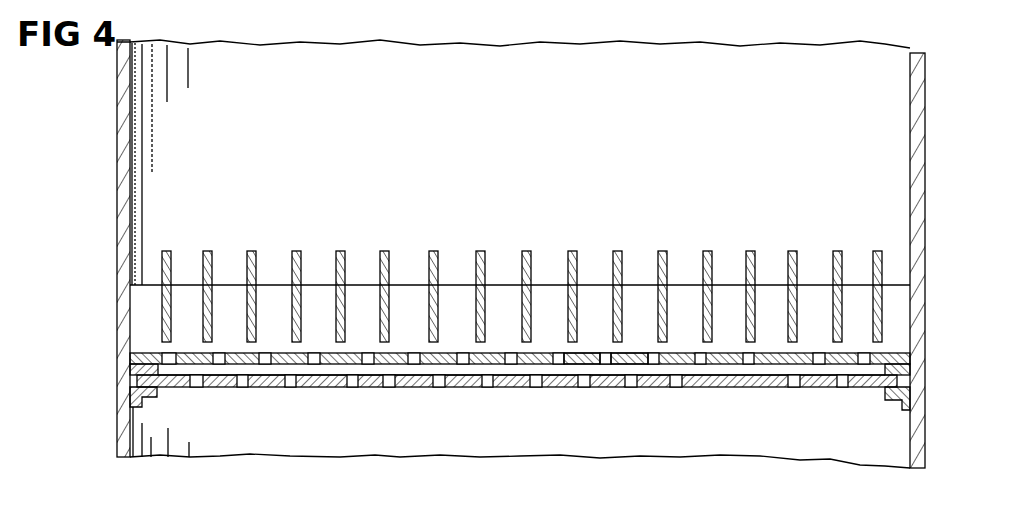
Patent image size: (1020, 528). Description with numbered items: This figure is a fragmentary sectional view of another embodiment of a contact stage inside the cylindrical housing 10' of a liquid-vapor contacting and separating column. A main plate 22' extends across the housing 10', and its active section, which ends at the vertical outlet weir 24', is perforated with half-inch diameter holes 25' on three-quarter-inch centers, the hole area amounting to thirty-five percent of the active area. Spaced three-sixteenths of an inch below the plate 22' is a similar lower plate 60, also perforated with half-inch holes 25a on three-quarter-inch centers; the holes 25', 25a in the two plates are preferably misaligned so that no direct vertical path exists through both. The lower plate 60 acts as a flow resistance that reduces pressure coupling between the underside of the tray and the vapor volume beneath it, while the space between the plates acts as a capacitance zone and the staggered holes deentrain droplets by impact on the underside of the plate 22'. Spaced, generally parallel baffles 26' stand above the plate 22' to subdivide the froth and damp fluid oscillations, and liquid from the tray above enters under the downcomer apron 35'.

The housing 10' is at (499, 254).
The baffles 26' is at (522, 274).
The outlet weir 24' is at (520, 253).
The plate 22' is at (520, 333).
The holes 25' is at (607, 333).
The lower plate 60 is at (512, 388).
The holes 25a is at (655, 388).
The downcomer apron 35' is at (520, 458).